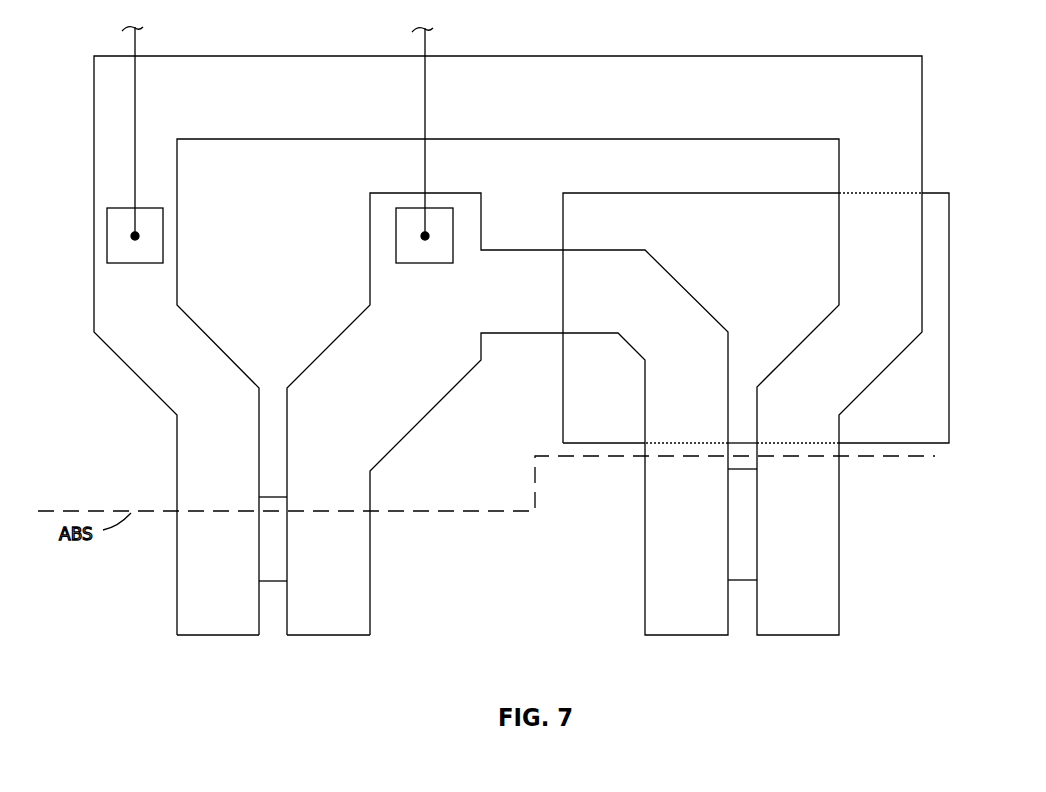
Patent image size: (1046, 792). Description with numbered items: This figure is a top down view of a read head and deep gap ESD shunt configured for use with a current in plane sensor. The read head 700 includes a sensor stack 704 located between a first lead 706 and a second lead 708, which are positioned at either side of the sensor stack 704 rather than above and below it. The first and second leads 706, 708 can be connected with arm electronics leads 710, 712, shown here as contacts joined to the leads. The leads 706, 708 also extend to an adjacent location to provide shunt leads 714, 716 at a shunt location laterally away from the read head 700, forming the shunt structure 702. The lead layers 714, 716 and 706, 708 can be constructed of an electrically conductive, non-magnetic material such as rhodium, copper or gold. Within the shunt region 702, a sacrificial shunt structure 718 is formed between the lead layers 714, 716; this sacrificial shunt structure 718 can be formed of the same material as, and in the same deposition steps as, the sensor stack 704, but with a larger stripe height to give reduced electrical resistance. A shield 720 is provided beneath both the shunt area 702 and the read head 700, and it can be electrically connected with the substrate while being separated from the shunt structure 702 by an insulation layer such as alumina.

The read head 700 is at (253, 651).
The shunt structure 702 is at (777, 651).
The sensor stack 704 is at (273, 530).
The first lead 706 is at (358, 575).
The second lead 708 is at (235, 575).
The arm electronics lead 710 is at (137, 42).
The arm electronics lead 712 is at (427, 47).
The shunt lead 714 is at (822, 537).
The shunt lead 716 is at (675, 560).
The sacrificial shunt structure 718 is at (742, 497).
The shield 720 is at (880, 604).